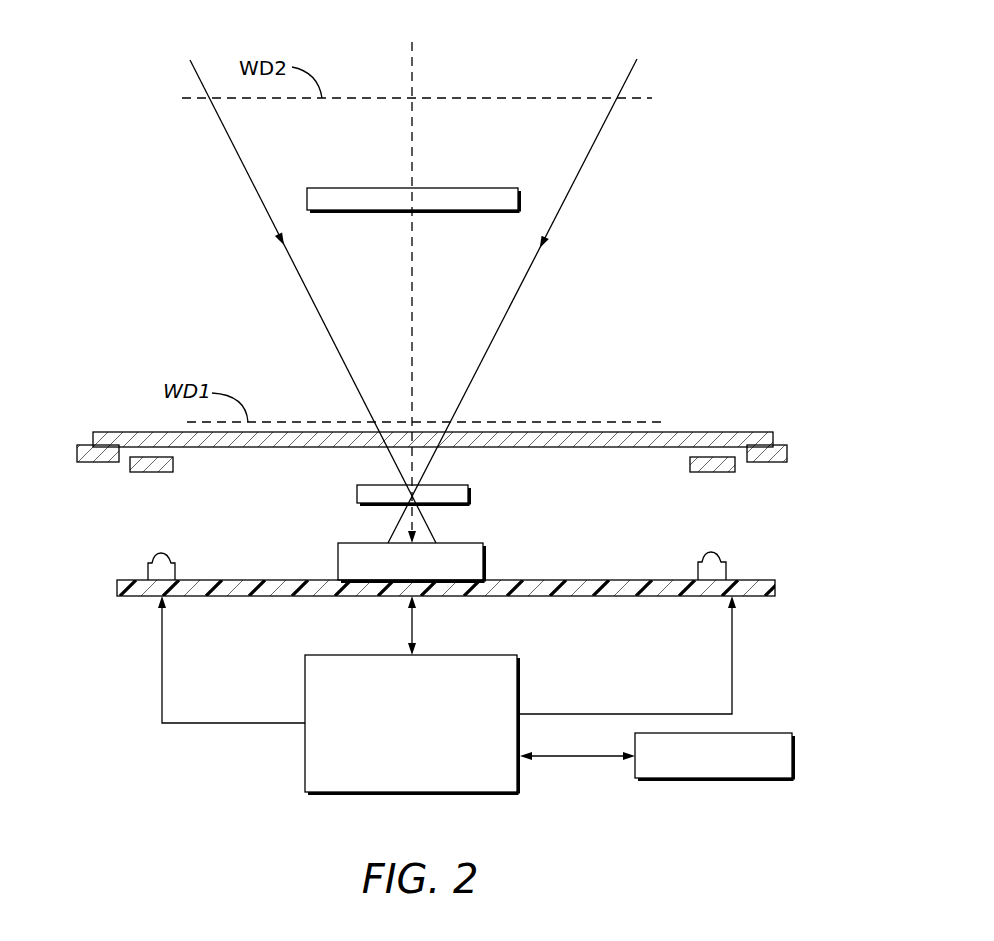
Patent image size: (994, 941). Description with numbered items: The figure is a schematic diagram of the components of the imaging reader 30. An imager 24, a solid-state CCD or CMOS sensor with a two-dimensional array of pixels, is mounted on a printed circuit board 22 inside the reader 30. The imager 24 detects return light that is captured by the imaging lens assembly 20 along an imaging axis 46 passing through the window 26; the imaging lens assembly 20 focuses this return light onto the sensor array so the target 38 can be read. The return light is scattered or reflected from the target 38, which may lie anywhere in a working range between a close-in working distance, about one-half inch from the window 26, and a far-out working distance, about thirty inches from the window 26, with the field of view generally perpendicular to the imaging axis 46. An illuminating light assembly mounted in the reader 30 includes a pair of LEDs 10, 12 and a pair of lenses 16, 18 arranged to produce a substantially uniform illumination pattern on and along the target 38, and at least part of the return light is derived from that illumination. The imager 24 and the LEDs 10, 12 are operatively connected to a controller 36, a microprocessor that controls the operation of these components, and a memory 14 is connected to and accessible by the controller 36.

The LED 10 is at (726, 570).
The LED 12 is at (177, 567).
The memory 14 is at (777, 733).
The lens 16 is at (690, 465).
The lens 18 is at (130, 466).
The imaging lens assembly 20 is at (455, 506).
The printed circuit board 22 is at (775, 585).
The imager 24 is at (375, 543).
The window 26 is at (115, 432).
The reader 30 is at (632, 343).
The controller 36 is at (303, 770).
The target 38 is at (357, 188).
The imaging axis 46 is at (414, 60).